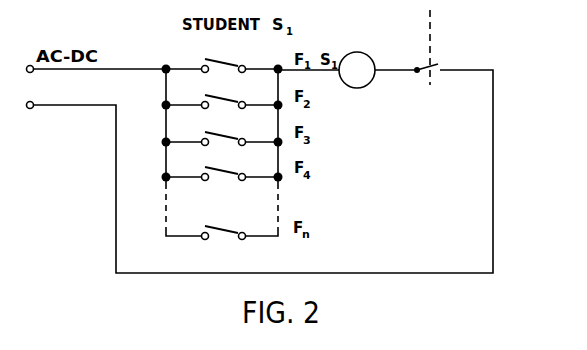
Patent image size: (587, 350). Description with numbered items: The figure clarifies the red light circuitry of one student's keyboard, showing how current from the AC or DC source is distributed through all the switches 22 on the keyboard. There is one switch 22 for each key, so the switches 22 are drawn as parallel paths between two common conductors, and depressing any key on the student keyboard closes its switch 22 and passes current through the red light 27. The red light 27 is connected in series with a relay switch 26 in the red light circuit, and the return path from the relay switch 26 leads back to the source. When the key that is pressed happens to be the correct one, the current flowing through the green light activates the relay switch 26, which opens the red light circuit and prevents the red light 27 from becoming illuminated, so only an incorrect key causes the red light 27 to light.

The switch 22 is at (211, 59).
The relay switch 26 is at (424, 67).
The red light 27 is at (358, 88).